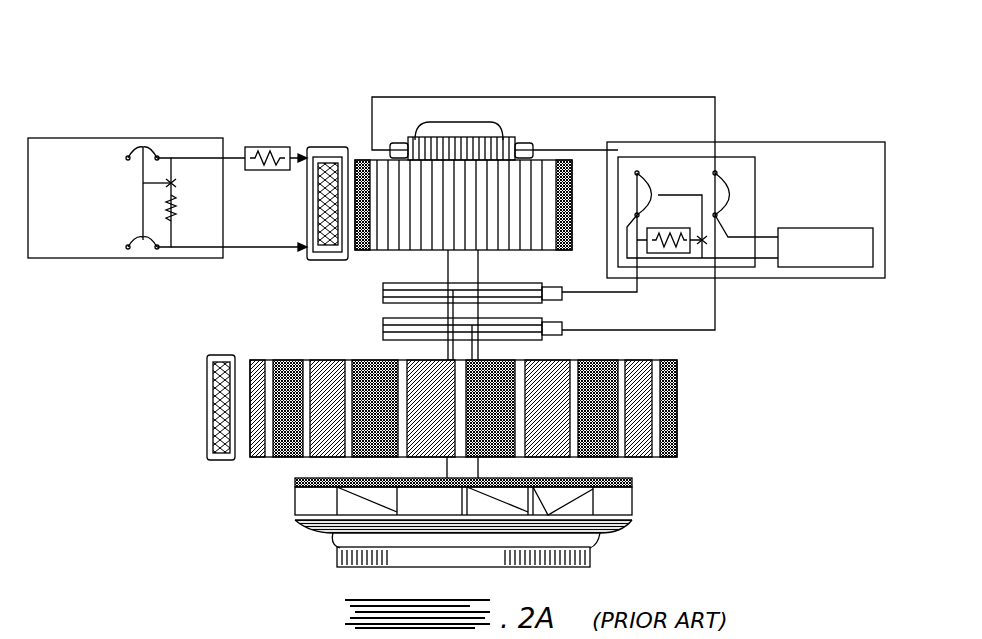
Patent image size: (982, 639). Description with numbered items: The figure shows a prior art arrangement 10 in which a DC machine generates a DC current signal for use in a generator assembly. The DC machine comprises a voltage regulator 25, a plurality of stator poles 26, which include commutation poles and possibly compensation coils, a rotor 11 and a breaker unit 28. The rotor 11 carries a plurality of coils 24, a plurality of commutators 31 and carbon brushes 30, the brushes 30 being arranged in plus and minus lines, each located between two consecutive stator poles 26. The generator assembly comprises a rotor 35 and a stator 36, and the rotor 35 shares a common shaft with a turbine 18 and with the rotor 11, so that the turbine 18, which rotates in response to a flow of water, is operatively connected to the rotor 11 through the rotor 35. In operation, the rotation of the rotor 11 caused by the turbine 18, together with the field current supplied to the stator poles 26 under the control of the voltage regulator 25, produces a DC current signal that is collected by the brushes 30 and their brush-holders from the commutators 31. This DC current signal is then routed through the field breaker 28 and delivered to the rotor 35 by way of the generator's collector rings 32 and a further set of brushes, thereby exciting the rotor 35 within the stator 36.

The prior art motor system 10 is at (543, 63).
The rotor 11 is at (576, 162).
The turbine 18 is at (295, 500).
The coils 24 is at (378, 252).
The voltage regulator 25 is at (87, 138).
The stator poles 26 is at (320, 147).
The breaker unit 28 is at (745, 142).
The carbon brushes 30 is at (398, 143).
The commutators 31 is at (460, 122).
The collector rings 32 is at (536, 278).
The rotor 35 is at (679, 410).
The stator 36 is at (207, 405).